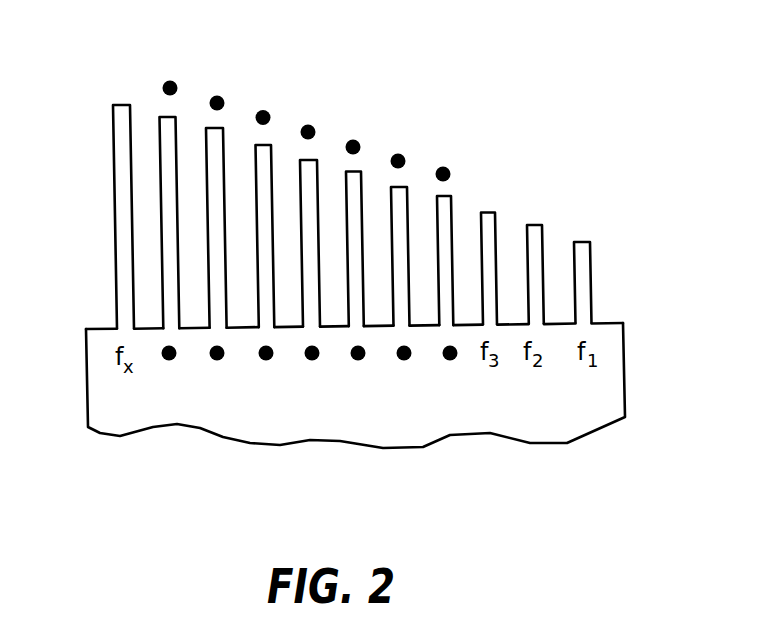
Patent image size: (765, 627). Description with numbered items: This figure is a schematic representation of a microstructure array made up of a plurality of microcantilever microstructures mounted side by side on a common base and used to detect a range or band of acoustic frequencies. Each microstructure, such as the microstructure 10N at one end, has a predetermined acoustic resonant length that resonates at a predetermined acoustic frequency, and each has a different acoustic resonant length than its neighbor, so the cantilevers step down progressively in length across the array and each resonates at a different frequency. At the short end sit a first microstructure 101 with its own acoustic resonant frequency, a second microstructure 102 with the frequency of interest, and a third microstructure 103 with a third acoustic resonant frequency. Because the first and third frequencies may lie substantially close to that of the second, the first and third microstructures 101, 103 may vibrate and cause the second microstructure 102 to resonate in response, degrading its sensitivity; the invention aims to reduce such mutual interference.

The microstructure 10N is at (122, 108).
The third microstructure 103 is at (486, 218).
The second microstructure 102 is at (532, 230).
The first microstructure 101 is at (585, 250).